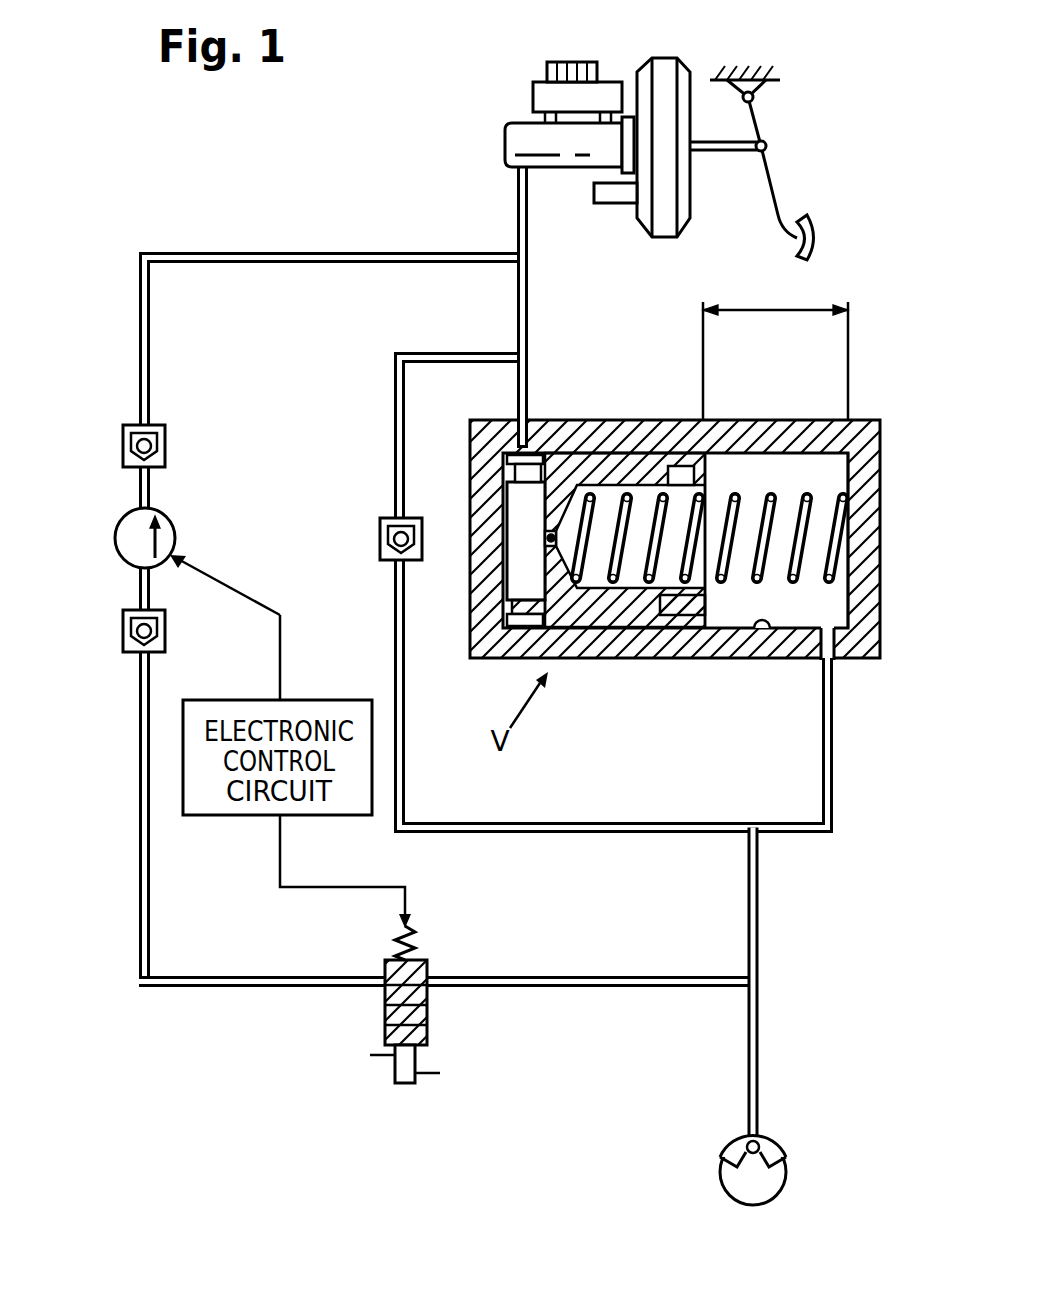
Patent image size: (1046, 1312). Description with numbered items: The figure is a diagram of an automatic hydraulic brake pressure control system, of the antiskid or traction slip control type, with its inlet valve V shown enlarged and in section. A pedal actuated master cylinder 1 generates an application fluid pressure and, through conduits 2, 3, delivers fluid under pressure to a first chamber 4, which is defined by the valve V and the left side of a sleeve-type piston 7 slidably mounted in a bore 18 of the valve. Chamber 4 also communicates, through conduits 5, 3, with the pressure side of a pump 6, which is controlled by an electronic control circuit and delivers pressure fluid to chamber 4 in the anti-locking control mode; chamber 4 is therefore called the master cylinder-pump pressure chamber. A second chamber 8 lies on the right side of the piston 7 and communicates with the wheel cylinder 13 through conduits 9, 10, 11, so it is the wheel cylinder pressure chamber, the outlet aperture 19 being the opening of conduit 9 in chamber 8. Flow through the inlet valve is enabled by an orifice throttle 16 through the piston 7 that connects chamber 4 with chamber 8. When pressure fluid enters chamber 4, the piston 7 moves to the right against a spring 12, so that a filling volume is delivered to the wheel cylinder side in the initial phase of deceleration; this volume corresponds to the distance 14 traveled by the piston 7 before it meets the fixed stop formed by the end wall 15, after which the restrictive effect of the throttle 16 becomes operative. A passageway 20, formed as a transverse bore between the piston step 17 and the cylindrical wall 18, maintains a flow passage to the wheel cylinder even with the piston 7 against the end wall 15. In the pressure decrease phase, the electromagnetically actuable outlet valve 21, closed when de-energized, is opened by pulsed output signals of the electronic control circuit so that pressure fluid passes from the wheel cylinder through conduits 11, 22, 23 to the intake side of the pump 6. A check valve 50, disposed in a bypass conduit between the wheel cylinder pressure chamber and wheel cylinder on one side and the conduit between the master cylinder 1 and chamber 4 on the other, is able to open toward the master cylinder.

The master cylinder 1 is at (507, 135).
The conduit 2 is at (528, 235).
The conduit 3 is at (528, 303).
The first chamber 4 is at (523, 568).
The conduit 5 is at (272, 263).
The pump 6 is at (173, 540).
The piston 7 is at (607, 452).
The second chamber 8 is at (780, 470).
The conduit 9 is at (830, 783).
The conduit 10 is at (757, 921).
The conduit 11 is at (757, 1048).
The spring 12 is at (738, 470).
The wheel brake cylinder 13 is at (762, 1140).
The distance 14 is at (768, 306).
The end wall 15 is at (835, 470).
The orifice throttle 16 is at (548, 540).
The piston step 17 is at (683, 660).
The bore 18 is at (744, 660).
The outlet aperture 19 is at (838, 660).
The passageway 20 is at (680, 470).
The outlet valve 21 is at (427, 1005).
The conduit 22 is at (617, 986).
The conduit 23 is at (257, 987).
The check valve 50 is at (380, 545).